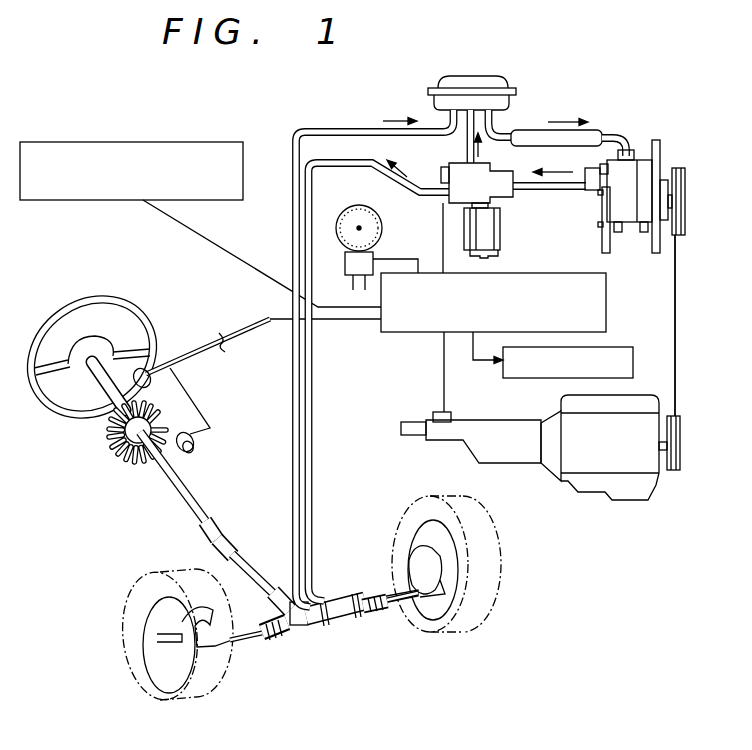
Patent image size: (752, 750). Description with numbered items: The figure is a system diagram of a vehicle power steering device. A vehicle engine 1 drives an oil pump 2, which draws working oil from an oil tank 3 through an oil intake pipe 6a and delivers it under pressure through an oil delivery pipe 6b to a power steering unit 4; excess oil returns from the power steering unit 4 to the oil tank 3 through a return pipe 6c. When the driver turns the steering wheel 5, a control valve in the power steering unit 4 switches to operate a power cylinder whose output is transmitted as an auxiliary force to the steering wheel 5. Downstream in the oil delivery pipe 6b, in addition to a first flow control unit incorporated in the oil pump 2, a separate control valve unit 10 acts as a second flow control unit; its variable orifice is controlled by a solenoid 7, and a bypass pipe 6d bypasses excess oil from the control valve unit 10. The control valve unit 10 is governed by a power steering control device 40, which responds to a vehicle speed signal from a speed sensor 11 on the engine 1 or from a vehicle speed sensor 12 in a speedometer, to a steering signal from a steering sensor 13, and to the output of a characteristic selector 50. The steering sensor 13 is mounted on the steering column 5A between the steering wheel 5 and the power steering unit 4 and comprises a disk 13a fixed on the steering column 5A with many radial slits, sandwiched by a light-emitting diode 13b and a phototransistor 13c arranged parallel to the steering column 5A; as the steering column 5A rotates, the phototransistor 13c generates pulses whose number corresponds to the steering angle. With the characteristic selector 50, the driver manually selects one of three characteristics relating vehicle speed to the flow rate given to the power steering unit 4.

The vehicle engine 1 is at (593, 460).
The oil pump 2 is at (643, 153).
The oil tank 3 is at (494, 82).
The power steering unit 4 is at (300, 646).
The steering wheel 5 is at (122, 300).
The steering column 5A is at (180, 503).
The oil intake pipe 6a is at (623, 134).
The oil delivery pipe 6b is at (312, 398).
The return pipe 6c is at (293, 303).
The bypass pipe 6d is at (466, 143).
The solenoid 7 is at (502, 239).
The control valve unit 10 is at (445, 208).
The speed sensor 11 is at (453, 416).
The vehicle speed sensor 12 is at (345, 253).
The steering sensor 13 is at (107, 464).
The disk 13a is at (125, 467).
The light-emitting diode 13b is at (148, 368).
The phototransistor 13c is at (195, 449).
The power steering control device 40 is at (606, 300).
The characteristic selector 50 is at (193, 142).